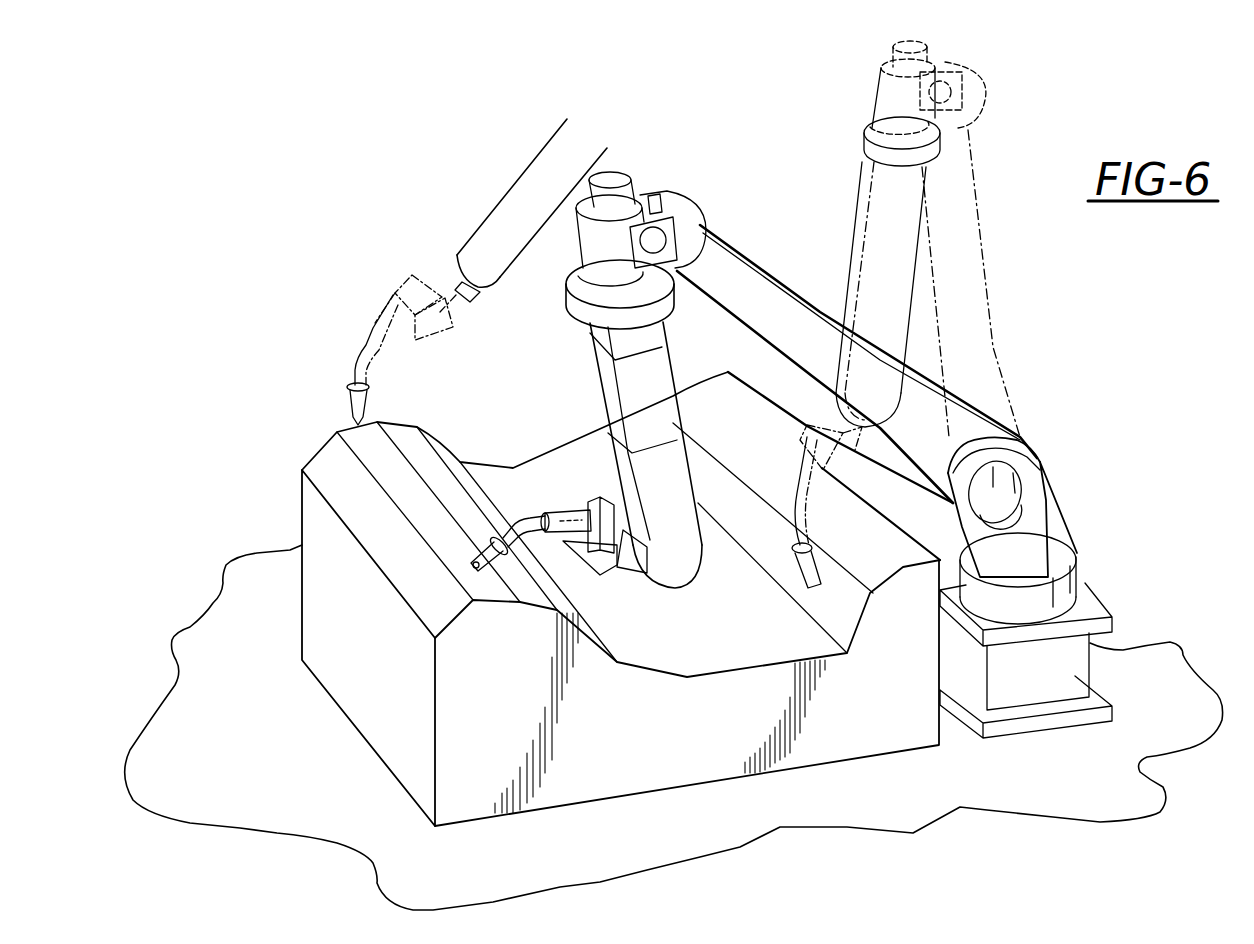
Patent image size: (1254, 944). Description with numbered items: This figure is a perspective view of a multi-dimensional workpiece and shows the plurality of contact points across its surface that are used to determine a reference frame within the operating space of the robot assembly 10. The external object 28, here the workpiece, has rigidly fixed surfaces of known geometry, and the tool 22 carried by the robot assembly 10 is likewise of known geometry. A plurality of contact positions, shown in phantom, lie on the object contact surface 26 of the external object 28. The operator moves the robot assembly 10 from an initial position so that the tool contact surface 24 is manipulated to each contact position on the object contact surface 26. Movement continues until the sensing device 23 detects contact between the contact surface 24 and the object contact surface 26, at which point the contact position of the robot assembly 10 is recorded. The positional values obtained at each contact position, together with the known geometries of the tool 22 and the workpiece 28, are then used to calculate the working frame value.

The robot assembly 10 is at (778, 192).
The tool 22 is at (470, 518).
The sensing device 23 is at (483, 547).
The contact surface 24 is at (480, 565).
The object contact surface 26 is at (384, 462).
The external object 28 is at (727, 766).